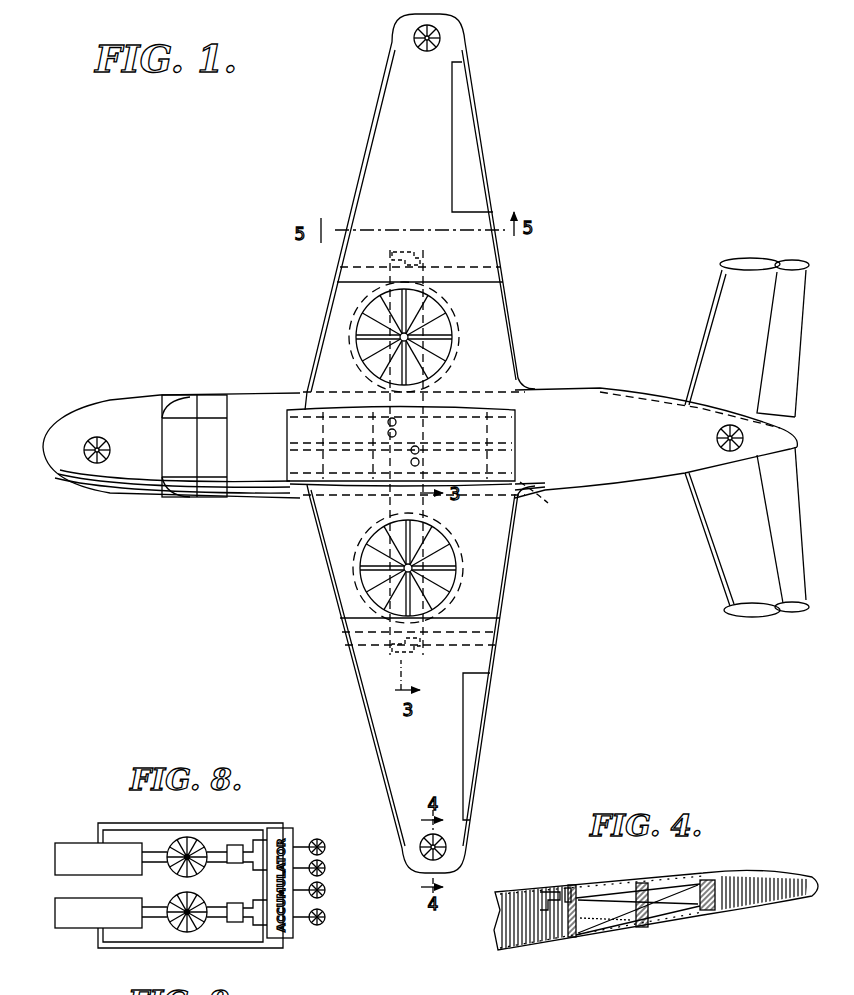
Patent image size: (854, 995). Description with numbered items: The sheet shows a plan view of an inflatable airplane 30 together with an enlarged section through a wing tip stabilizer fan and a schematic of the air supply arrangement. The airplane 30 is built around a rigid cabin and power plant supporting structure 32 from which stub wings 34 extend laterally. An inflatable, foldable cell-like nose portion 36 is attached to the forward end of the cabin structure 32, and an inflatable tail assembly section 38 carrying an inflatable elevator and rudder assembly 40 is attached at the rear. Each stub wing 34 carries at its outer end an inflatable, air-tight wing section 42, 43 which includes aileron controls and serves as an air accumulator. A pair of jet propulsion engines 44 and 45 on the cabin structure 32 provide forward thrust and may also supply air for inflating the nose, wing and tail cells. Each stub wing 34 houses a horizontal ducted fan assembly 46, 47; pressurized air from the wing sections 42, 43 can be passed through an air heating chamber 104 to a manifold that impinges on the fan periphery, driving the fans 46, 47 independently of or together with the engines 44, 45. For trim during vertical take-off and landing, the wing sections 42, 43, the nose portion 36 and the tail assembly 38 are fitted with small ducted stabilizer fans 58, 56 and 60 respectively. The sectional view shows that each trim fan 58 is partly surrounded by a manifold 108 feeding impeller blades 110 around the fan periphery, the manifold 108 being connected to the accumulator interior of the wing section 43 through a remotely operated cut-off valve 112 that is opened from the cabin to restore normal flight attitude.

In FIG. 1, the inflatable airplane 30 is at (548, 298).
In FIG. 1, the cabin and power plant supporting structure 32 is at (262, 462).
In FIG. 1, the stub wings 34 is at (497, 352).
In FIG. 1, the nose portion 36 is at (128, 466).
In FIG. 1, the tail assembly section 38 is at (640, 455).
In FIG. 1, the elevator and rudder assembly 40 is at (750, 606).
In FIG. 1, the inflatable wing section 42 is at (432, 147).
In FIG. 1, the inflatable wing section 43 is at (447, 748).
In FIG. 4, the inflatable wing section 43 is at (742, 916).
In FIG. 1, the jet propulsion engine 44 is at (548, 388).
In FIG. 8, the jet propulsion engine 44 is at (70, 843).
In FIG. 1, the jet propulsion engine 45 is at (540, 510).
In FIG. 8, the jet propulsion engine 45 is at (70, 922).
In FIG. 1, the ducted fan assembly 46 is at (380, 315).
In FIG. 8, the ducted fan assembly 46 is at (185, 845).
In FIG. 1, the ducted fan assembly 47 is at (378, 578).
In FIG. 8, the ducted fan assembly 47 is at (190, 925).
In FIG. 1, the ducted fan 56 is at (90, 462).
In FIG. 1, the ducted fan 58 is at (415, 40).
In FIG. 4, the ducted fan 58 is at (617, 930).
In FIG. 1, the ducted fan 60 is at (724, 448).
In FIG. 1, the air heating chamber 104 is at (495, 646).
In FIG. 8, the air heating chamber 104 is at (240, 845).
In FIG. 4, the manifold 108 is at (572, 938).
In FIG. 4, the impeller blades 110 is at (578, 892).
In FIG. 4, the cut-off valve 112 is at (542, 890).